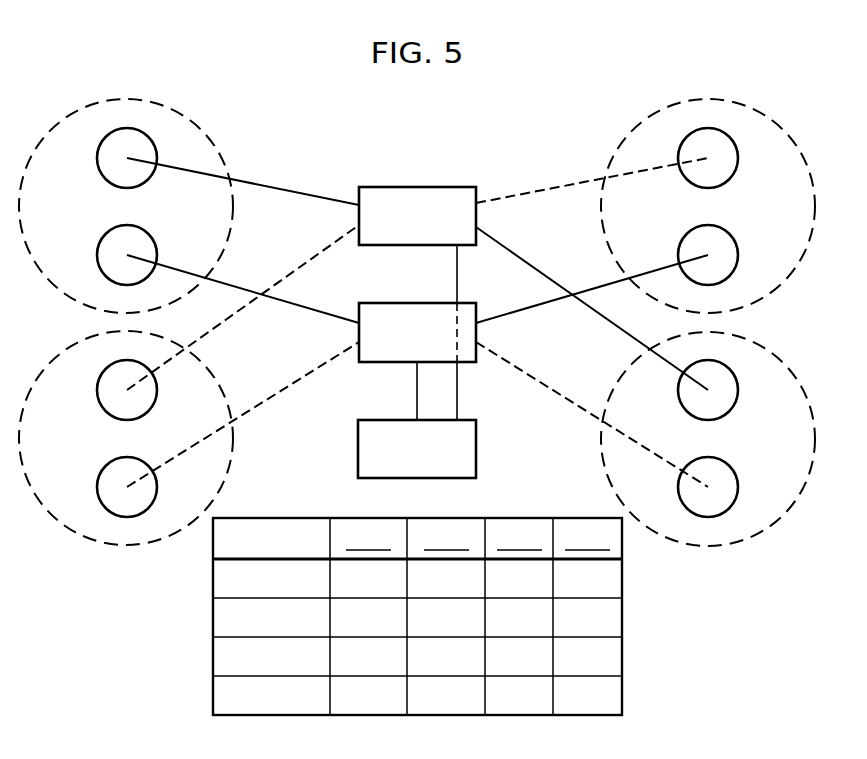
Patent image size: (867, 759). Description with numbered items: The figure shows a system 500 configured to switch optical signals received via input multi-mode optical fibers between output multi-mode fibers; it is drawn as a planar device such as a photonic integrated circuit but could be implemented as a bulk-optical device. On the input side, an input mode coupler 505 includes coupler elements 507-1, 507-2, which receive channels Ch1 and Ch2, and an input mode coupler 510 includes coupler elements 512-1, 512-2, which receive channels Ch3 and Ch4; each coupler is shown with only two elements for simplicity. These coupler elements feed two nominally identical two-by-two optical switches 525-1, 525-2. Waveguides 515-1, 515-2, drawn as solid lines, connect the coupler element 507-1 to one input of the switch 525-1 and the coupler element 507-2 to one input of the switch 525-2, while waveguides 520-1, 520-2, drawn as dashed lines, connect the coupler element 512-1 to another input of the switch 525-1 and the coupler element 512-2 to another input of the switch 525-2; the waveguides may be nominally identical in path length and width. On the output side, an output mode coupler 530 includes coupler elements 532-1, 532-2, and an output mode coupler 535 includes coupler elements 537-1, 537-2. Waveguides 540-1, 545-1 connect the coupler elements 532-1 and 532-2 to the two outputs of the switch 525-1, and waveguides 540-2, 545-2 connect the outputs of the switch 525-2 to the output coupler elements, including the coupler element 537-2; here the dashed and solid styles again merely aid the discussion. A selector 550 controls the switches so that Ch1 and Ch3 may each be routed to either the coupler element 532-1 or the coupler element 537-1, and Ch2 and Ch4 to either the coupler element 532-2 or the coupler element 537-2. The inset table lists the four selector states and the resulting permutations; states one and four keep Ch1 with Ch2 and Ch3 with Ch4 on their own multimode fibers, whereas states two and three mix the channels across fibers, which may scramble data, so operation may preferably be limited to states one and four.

The system 500 is at (340, 116).
The input mode coupler 505 is at (98, 94).
The coupler element 507-1 is at (106, 179).
The coupler element 507-2 is at (148, 234).
The input mode coupler 510 is at (110, 556).
The coupler element 512-1 is at (106, 411).
The coupler element 512-2 is at (148, 466).
The waveguide 515-1 is at (289, 191).
The waveguide 515-2 is at (309, 310).
The waveguide 520-1 is at (317, 254).
The waveguide 520-2 is at (289, 390).
The 2×2 optical switch 525-1 is at (388, 230).
The 2×2 optical switch 525-2 is at (388, 346).
The output mode coupler 530 is at (736, 94).
The coupler element 532-1 is at (688, 179).
The coupler element 532-2 is at (730, 234).
The output mode coupler 535 is at (728, 556).
The coupler element 537-1 is at (729, 411).
The coupler element 537-2 is at (687, 466).
The waveguide 540-1 is at (539, 191).
The waveguide 540-2 is at (522, 258).
The waveguide 545-1 is at (561, 299).
The waveguide 545-2 is at (541, 384).
The selector 550 is at (398, 462).